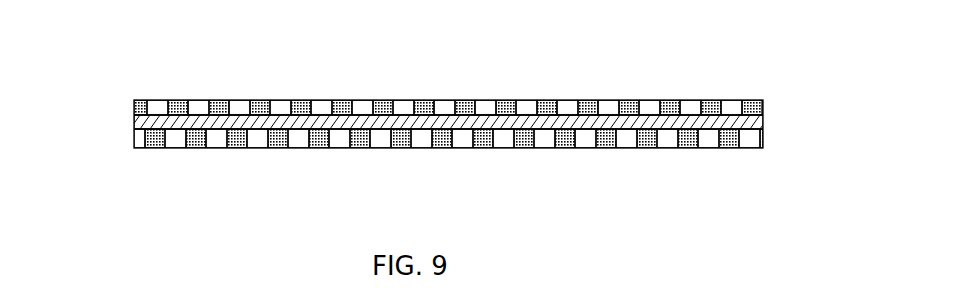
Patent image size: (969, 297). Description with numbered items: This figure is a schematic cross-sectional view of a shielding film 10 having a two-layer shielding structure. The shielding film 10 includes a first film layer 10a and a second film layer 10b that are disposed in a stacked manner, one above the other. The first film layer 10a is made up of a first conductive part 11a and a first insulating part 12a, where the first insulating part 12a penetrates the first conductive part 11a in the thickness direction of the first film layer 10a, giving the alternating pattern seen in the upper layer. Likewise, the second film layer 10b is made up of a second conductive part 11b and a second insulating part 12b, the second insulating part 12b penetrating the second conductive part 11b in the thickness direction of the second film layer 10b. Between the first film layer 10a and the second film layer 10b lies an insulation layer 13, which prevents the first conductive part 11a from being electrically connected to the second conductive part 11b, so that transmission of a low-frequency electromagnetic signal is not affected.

The shielding film 10 is at (102, 50).
The first film layer 10a is at (445, 78).
The second film layer 10b is at (452, 172).
The first conductive part 11a is at (387, 100).
The second conductive part 11b is at (267, 148).
The first insulating part 12a is at (275, 100).
The second insulating part 12b is at (383, 140).
The insulation layer 13 is at (143, 128).